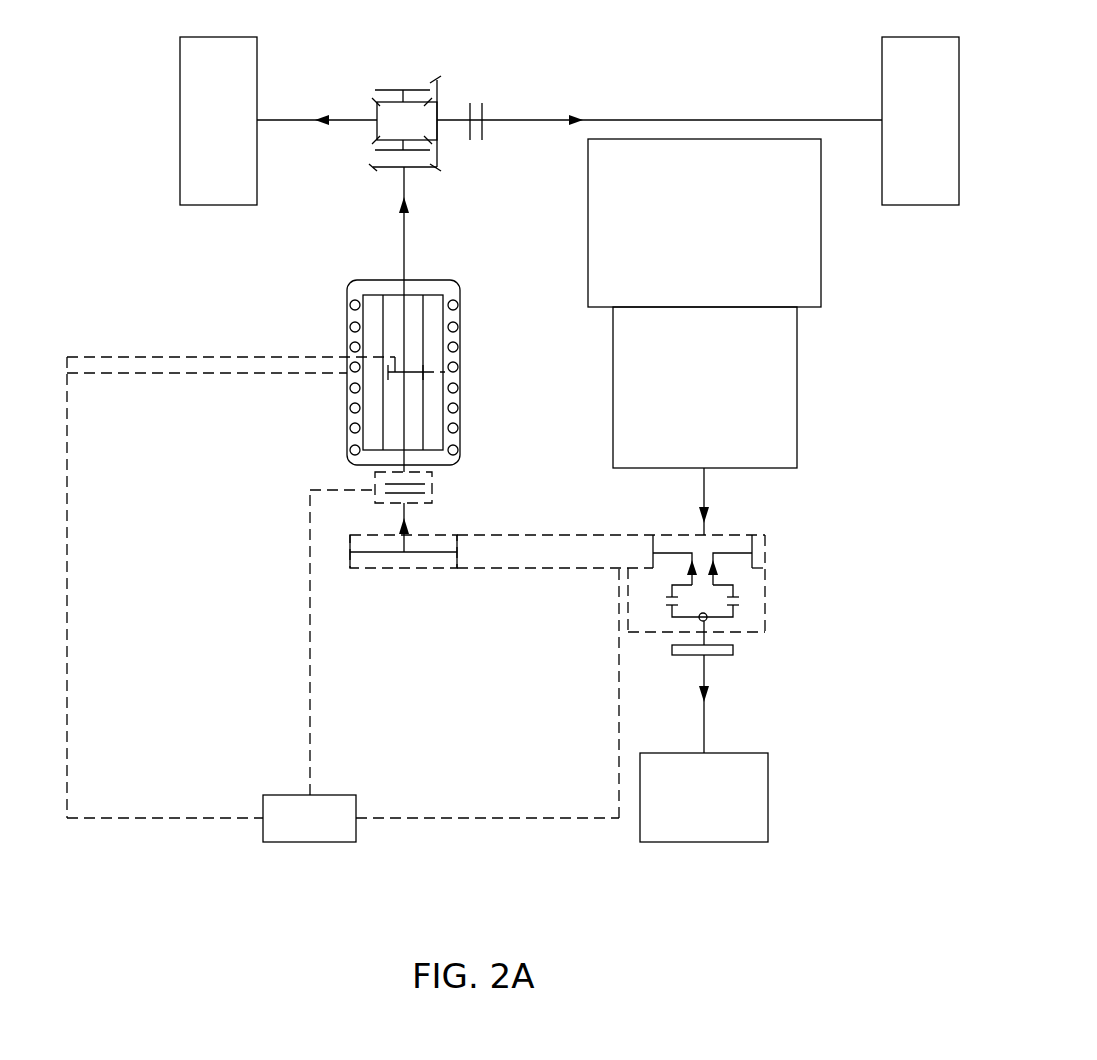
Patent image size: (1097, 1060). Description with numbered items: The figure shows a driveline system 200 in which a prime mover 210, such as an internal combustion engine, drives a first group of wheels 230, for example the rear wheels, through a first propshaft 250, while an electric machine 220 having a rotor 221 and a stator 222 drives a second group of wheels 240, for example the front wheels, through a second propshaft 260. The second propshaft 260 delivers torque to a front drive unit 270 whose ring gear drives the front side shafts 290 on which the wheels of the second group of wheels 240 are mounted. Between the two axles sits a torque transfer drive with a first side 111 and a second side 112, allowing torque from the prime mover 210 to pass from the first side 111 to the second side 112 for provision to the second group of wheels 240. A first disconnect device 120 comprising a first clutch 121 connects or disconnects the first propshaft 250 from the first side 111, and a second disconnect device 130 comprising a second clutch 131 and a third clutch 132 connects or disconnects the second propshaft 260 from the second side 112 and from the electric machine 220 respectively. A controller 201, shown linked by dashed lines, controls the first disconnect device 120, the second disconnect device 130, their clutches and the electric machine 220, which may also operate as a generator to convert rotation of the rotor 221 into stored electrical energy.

The driveline system 200 is at (140, 858).
The controller 201 is at (310, 843).
The first side 111 is at (766, 554).
The second side 112 is at (418, 553).
The first disconnect device 120 is at (719, 627).
The first clutch 121 is at (665, 599).
The second disconnect device 130 is at (402, 477).
The second clutch 131 is at (425, 491).
The third clutch 132 is at (445, 372).
The prime mover 210 is at (587, 224).
The electric machine 220 is at (361, 376).
The rotor 221 is at (385, 310).
The stator 222 is at (355, 428).
The first group of wheels 230 is at (769, 798).
The second group of wheels 240 is at (179, 121).
The first propshaft 250 is at (706, 495).
The second propshaft 260 is at (402, 226).
The front drive unit 270 is at (418, 66).
The front side shafts 290 is at (300, 119).